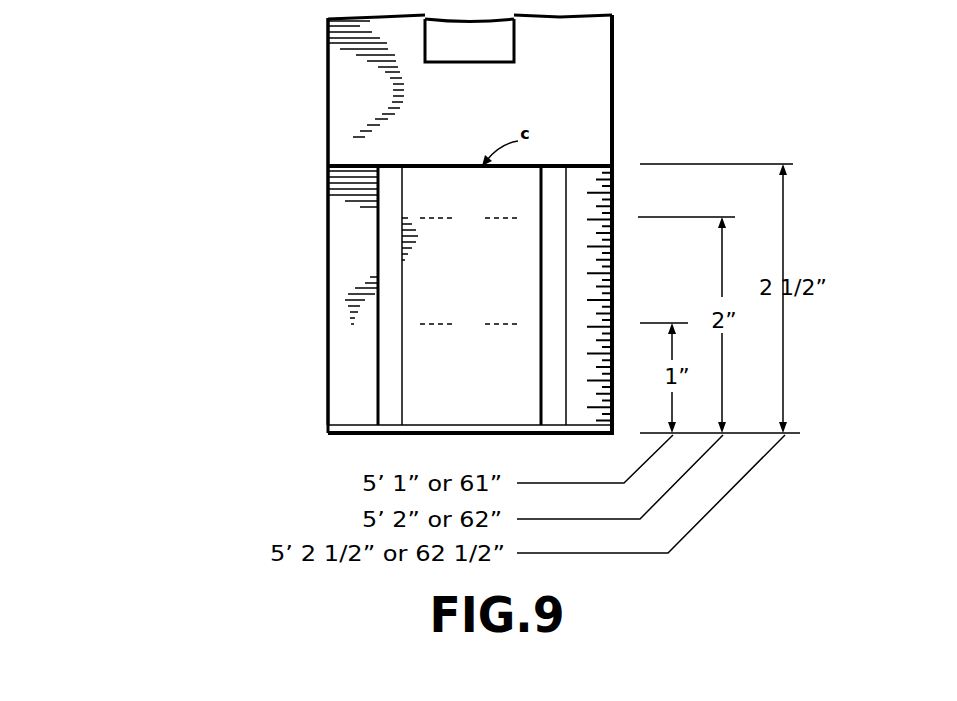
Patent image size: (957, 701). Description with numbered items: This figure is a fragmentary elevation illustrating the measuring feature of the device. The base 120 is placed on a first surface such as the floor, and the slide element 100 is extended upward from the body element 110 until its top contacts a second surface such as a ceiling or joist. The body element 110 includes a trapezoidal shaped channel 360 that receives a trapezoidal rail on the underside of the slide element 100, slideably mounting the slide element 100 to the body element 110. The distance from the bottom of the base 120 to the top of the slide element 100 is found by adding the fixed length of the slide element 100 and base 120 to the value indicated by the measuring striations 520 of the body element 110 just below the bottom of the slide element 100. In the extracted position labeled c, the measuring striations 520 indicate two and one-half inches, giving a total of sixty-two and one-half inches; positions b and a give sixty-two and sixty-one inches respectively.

The slide element 100 is at (328, 82).
The body element 110 is at (328, 225).
The trapezoidal shaped channel 360 is at (388, 373).
The base 120 is at (346, 435).
The measuring striations 520 is at (612, 172).